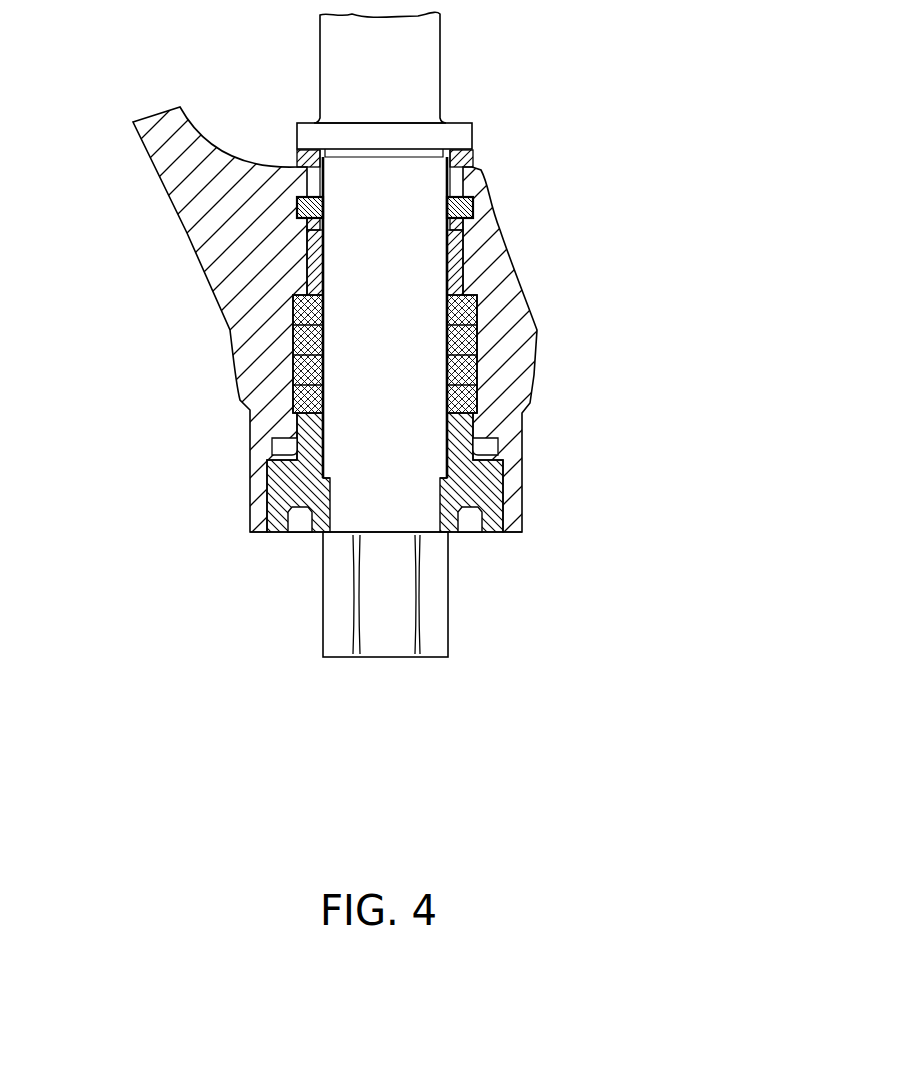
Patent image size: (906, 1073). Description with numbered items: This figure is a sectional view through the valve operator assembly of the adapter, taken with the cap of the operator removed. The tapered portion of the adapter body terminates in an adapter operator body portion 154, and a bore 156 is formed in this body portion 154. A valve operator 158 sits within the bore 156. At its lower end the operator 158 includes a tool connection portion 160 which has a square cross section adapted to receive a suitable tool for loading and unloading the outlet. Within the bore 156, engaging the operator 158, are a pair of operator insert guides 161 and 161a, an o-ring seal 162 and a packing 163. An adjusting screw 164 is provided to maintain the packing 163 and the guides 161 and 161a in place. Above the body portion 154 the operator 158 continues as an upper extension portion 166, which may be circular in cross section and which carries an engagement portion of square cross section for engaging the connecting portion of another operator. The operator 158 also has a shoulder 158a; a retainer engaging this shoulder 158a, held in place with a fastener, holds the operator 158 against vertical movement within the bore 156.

The adapter operator body portion 154 is at (183, 165).
The bore 156 is at (472, 167).
The valve operator 158 is at (405, 253).
The shoulder 158a is at (445, 135).
The tool connection portion 160 is at (417, 618).
The operator insert guide 161 is at (312, 267).
The operator insert guide 161a is at (310, 472).
The o-ring seal 162 is at (303, 207).
The packing 163 is at (293, 340).
The adjusting screw 164 is at (307, 525).
The upper extension portion 166 is at (335, 58).